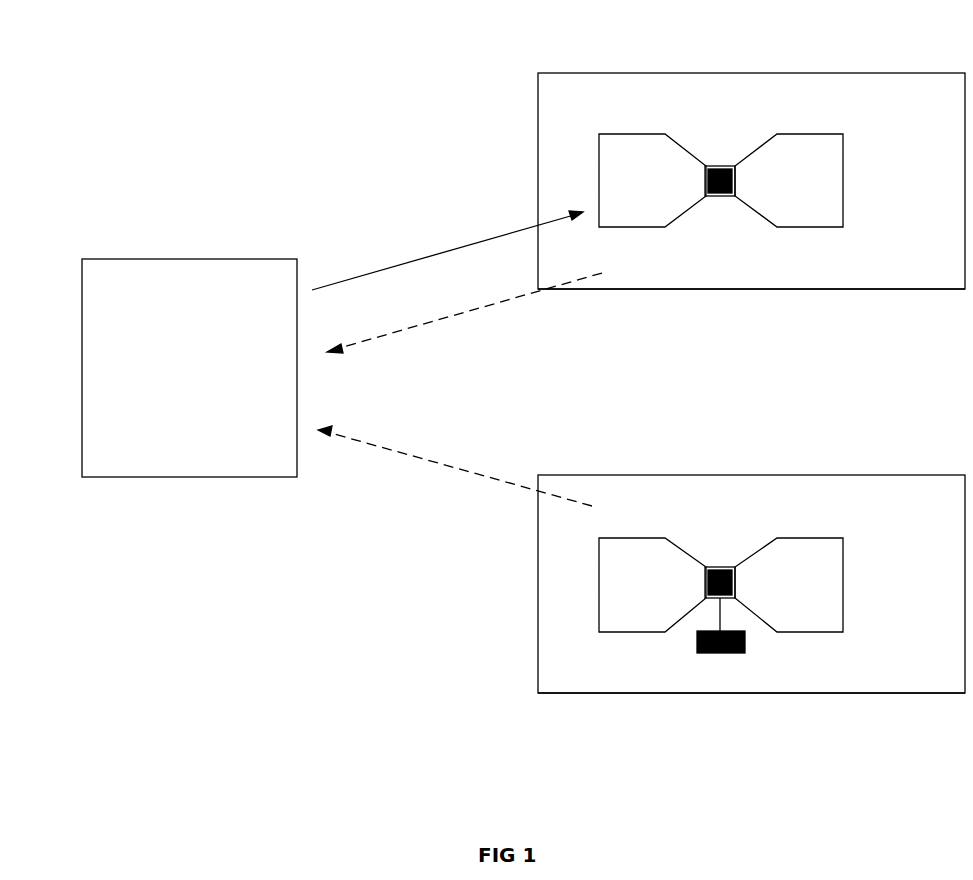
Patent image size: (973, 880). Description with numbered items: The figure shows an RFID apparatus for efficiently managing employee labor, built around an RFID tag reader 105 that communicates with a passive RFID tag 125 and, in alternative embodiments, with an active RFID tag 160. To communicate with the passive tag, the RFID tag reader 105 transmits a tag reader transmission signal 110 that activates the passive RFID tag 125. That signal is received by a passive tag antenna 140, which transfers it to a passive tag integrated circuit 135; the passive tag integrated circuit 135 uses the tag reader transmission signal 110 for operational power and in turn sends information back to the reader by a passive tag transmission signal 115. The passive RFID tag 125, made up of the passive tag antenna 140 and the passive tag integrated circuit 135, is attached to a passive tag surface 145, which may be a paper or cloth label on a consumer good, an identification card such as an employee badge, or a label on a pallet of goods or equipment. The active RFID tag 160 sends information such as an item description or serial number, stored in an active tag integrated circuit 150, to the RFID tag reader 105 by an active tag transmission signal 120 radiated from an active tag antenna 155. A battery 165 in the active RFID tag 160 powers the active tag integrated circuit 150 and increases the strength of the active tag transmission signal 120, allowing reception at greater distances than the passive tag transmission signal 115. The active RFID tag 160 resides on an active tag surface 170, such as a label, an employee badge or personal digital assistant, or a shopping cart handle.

The RFID tag reader 105 is at (145, 259).
The tag reader transmission signal 110 is at (415, 260).
The passive tag transmission signal 115 is at (417, 327).
The active tag transmission signal 120 is at (432, 460).
The passive RFID tag 125 is at (630, 118).
The passive tag integrated circuit 135 is at (718, 166).
The passive tag antenna 140 is at (813, 134).
The passive tag surface 145 is at (935, 290).
The active tag integrated circuit 150 is at (720, 567).
The active tag antenna 155 is at (812, 537).
The active RFID tag 160 is at (585, 647).
The battery 165 is at (697, 655).
The active tag surface 170 is at (937, 692).